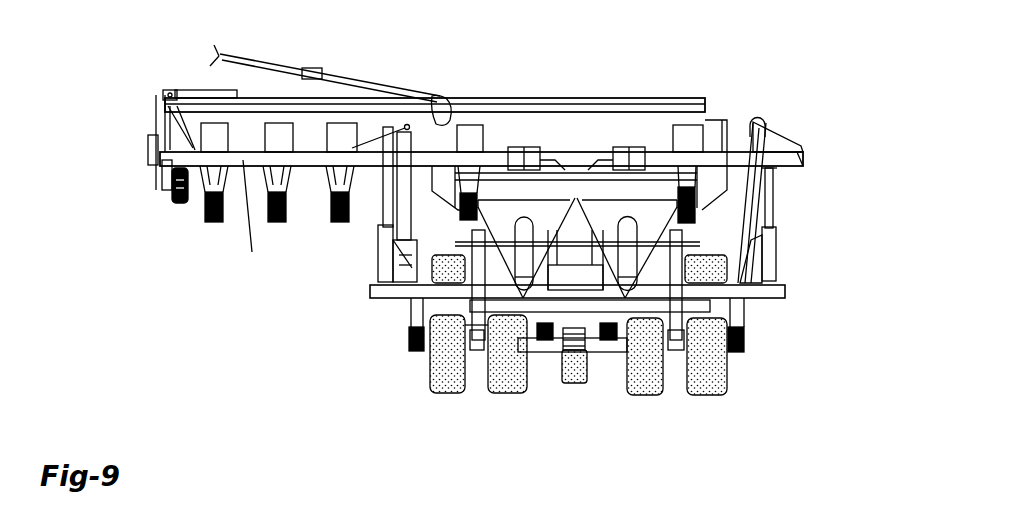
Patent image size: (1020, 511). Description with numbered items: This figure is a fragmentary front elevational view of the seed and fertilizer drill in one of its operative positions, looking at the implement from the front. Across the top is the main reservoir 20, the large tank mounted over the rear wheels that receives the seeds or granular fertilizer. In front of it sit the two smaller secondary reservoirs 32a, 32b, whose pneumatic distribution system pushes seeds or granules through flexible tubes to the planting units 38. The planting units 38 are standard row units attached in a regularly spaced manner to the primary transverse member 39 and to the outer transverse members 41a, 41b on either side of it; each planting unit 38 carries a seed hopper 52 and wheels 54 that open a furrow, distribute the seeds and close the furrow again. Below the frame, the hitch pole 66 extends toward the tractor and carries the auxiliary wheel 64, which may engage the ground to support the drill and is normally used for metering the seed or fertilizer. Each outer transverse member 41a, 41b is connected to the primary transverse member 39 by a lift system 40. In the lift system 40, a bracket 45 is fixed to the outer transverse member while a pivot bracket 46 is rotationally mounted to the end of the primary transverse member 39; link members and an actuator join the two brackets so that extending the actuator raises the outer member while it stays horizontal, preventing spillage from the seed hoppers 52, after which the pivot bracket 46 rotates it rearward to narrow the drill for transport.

The main reservoir 20 is at (729, 118).
The secondary reservoir 32a is at (503, 210).
The secondary reservoir 32b is at (608, 210).
The planting units 38 is at (201, 206).
The primary transverse member 39 is at (786, 297).
The lift system 40 is at (381, 259).
The outer transverse member 41a is at (248, 218).
The outer transverse member 41b is at (798, 163).
The bracket 45 is at (784, 141).
The pivot bracket 46 is at (753, 265).
The seed hopper 52 is at (279, 131).
The wheels 54 is at (211, 224).
The auxiliary wheel 64 is at (578, 375).
The hitch pole 66 is at (600, 347).